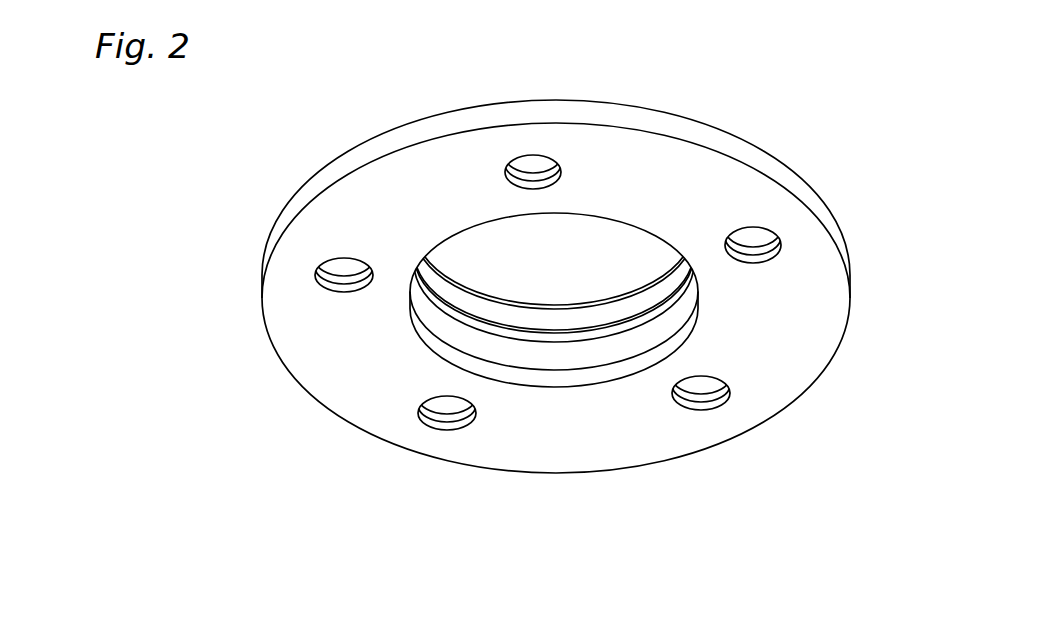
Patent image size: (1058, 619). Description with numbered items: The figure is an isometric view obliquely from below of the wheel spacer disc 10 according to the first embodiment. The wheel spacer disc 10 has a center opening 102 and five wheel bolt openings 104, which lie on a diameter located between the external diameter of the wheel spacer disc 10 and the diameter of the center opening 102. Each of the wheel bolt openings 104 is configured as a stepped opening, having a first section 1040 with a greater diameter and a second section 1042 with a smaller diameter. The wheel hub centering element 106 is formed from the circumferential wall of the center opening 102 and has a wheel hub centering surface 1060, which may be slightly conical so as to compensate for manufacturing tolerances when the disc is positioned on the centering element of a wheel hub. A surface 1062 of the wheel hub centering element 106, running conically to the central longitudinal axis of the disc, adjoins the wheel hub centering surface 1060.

The wheel spacer disc 10 is at (784, 103).
The center opening 102 is at (537, 235).
The wheel bolt openings 104 is at (699, 383).
The first section 1040 is at (343, 287).
The second section 1042 is at (440, 421).
The wheel hub centering element 106 is at (578, 397).
The wheel hub centering surface 1060 is at (497, 345).
The surface 1062 is at (595, 313).